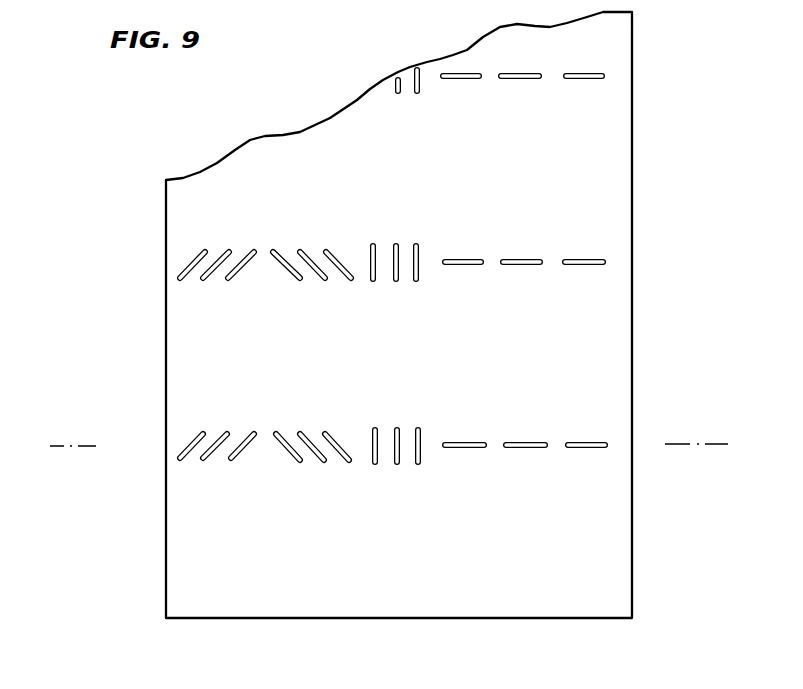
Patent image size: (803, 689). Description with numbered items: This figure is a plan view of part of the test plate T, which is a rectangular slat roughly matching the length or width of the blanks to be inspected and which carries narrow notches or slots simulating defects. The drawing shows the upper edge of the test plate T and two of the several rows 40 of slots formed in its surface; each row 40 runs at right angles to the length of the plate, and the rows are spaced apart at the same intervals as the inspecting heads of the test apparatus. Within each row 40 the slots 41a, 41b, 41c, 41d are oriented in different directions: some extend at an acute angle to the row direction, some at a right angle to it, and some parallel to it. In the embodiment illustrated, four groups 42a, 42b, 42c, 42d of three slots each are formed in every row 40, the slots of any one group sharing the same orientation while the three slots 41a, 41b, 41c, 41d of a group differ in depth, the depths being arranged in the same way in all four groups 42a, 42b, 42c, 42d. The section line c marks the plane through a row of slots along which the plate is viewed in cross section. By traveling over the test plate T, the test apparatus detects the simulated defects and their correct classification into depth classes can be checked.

The row 40 is at (176, 263).
The test plate T is at (323, 145).
The slot 41a is at (223, 250).
The slot 41b is at (313, 250).
The slot 41c is at (400, 240).
The slot 41d is at (523, 254).
The group of slots 42a is at (221, 462).
The group of slots 42b is at (336, 462).
The group of slots 42c is at (405, 462).
The group of slots 42d is at (535, 450).
The section line c- c is at (388, 445).